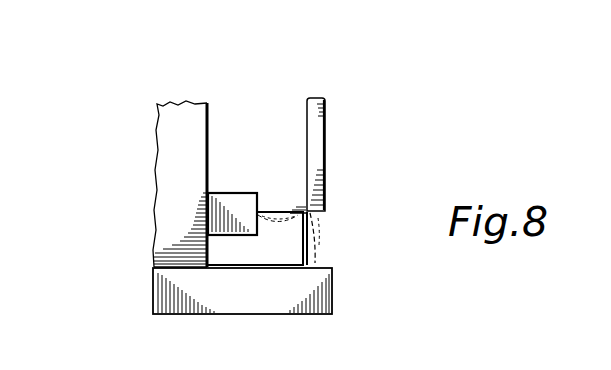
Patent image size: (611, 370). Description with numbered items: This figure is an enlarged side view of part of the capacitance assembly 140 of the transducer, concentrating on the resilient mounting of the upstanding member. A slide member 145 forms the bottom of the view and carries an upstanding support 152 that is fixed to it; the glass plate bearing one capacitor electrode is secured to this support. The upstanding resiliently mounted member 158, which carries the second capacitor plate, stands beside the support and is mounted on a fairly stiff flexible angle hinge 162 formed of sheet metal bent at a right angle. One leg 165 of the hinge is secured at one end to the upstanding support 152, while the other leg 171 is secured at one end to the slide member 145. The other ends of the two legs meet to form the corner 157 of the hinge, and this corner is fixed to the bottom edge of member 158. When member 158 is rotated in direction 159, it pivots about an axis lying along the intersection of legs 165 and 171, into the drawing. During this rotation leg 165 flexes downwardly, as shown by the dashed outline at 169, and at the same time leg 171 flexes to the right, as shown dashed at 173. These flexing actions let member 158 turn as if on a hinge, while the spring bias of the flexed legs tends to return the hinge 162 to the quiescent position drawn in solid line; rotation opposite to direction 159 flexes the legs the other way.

The capacitance assembly 140 is at (363, 122).
The slide member 145 is at (156, 293).
The upstanding support 152 is at (204, 118).
The corner of the hinge 157 is at (317, 220).
The upstanding resiliently mounted member 158 is at (325, 158).
The direction of rotation 159 is at (273, 120).
The flexible angle hinge 162 is at (346, 242).
The hinge leg 165 is at (284, 210).
The flexed position of leg 169 is at (284, 228).
The hinge leg 171 is at (316, 258).
The flexed position of leg 173 is at (322, 228).